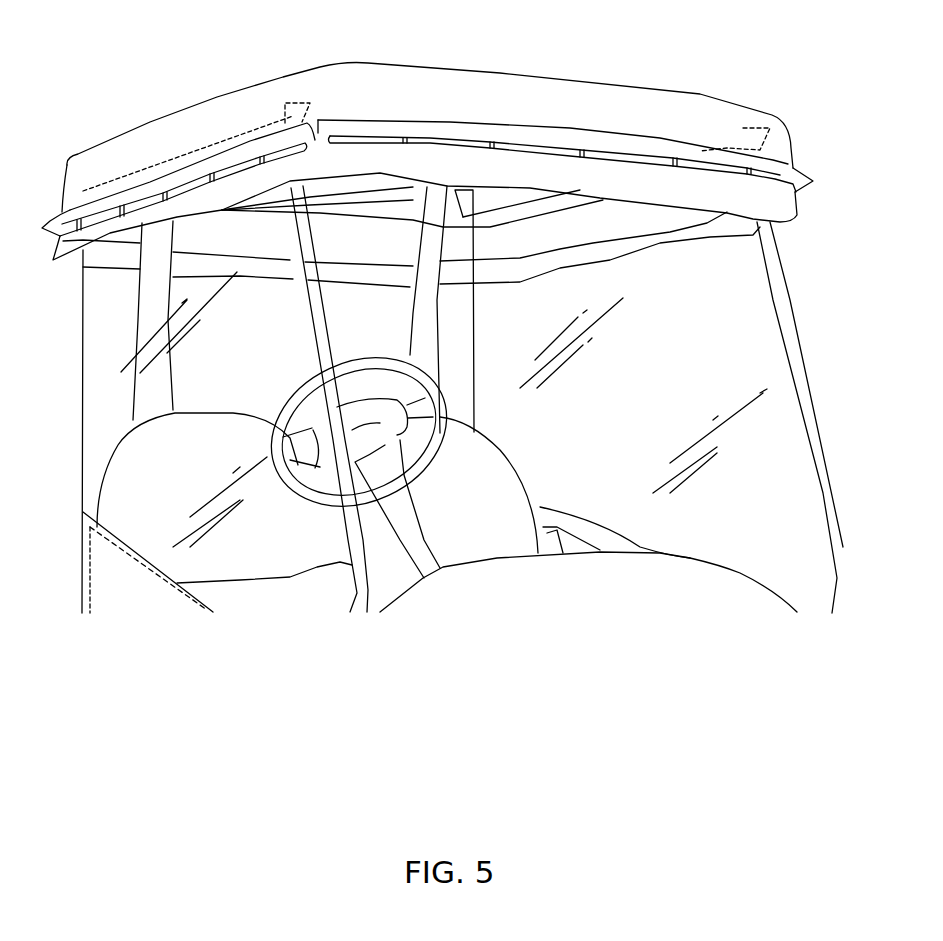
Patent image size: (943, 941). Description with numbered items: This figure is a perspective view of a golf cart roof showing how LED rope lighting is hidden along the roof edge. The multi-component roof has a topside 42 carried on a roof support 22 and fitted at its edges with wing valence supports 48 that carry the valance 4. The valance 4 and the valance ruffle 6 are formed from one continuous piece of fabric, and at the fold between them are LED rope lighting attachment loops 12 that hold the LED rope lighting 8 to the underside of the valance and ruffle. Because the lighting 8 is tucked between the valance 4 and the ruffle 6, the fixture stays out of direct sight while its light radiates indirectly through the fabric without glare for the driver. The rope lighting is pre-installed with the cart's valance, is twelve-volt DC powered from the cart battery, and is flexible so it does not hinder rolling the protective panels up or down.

The valance 4 is at (72, 247).
The valance ruffle 6 is at (453, 125).
The LED rope lighting 8 is at (120, 215).
The LED rope lighting attachment loops 12 is at (163, 190).
The roof support 22 is at (150, 298).
The multi-component roof topside 42 is at (360, 64).
The multi-component roof wing valence supports 48 is at (72, 187).